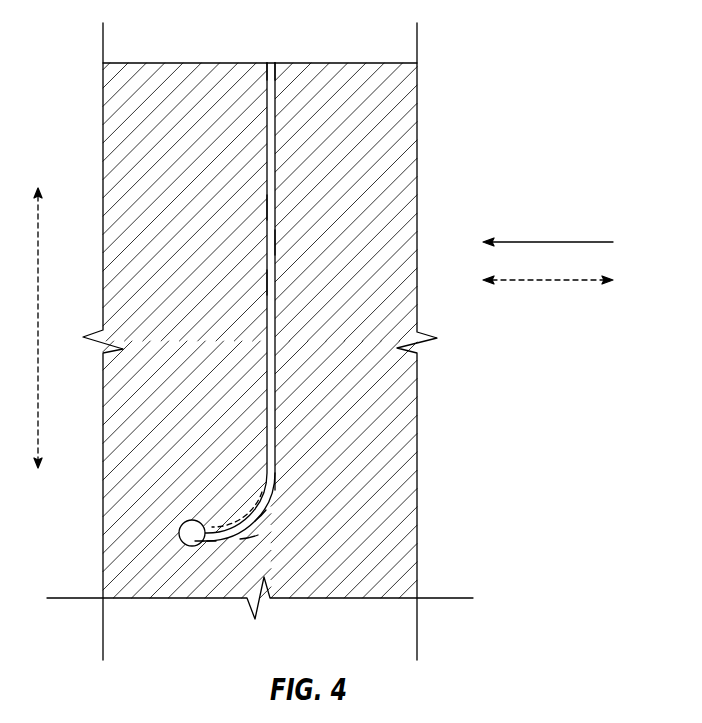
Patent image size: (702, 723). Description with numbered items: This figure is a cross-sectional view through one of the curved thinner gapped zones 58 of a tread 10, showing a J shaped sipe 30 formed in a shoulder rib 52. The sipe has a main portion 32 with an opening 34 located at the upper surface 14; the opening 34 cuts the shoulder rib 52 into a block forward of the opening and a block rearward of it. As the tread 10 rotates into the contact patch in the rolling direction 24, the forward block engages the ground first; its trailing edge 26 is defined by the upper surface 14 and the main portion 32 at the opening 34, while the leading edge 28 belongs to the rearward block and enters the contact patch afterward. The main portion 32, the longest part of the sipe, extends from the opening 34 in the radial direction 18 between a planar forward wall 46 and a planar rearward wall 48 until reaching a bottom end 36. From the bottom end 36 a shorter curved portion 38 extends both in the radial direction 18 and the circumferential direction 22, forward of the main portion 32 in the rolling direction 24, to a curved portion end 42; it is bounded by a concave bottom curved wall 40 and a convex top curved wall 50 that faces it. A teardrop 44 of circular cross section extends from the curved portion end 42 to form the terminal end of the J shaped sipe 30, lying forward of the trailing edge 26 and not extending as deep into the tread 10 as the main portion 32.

The tread 10 is at (462, 90).
The upper surface 14 is at (177, 58).
The radial direction 18 is at (37, 328).
The circumferential direction 22 is at (549, 281).
The rolling direction 24 is at (549, 241).
The trailing edge 26 is at (266, 61).
The leading edge 28 is at (277, 61).
The J shaped sipe 30 is at (276, 181).
The main portion 32 is at (267, 283).
The opening 34 is at (272, 61).
The bottom end 36 is at (280, 487).
The curved portion 38 is at (216, 543).
The bottom curved wall 40 is at (266, 510).
The curved portion end 42 is at (203, 544).
The teardrop 44 is at (181, 530).
The forward wall 46 is at (267, 208).
The rearward wall 48 is at (276, 242).
The top curved wall 50 is at (243, 514).
The shoulder rib 52 is at (416, 160).
The curved thinner gapped zone 58 is at (258, 535).